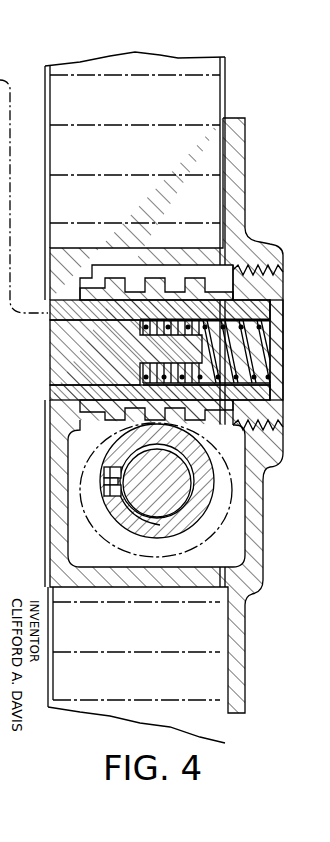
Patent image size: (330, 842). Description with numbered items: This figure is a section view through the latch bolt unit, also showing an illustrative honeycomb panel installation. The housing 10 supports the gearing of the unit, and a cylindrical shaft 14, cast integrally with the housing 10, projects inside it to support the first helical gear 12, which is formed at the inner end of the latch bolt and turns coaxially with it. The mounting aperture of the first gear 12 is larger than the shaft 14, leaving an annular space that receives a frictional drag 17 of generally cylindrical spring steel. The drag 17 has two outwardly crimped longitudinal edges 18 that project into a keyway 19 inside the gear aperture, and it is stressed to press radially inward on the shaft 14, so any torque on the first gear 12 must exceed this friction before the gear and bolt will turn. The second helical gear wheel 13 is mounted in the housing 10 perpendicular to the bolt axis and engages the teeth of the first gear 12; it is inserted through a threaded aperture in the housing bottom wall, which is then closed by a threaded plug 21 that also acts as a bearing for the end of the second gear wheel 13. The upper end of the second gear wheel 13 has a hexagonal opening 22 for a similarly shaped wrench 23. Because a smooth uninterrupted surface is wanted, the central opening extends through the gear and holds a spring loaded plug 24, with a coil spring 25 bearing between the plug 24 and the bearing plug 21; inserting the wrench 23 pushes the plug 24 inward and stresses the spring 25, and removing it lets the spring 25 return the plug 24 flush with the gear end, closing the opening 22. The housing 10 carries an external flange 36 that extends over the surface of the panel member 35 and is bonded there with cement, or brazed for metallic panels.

The housing 10 is at (167, 423).
The first helical gear 12 is at (103, 470).
The second helical gear wheel 13 is at (158, 270).
The cylindrical shaft 14 is at (172, 500).
The frictional drag 17 is at (122, 522).
The outwardly crimped longitudinal edges 18 is at (105, 492).
The keyway 19 is at (105, 482).
The threaded plug 21 is at (270, 290).
The opening 22 is at (48, 322).
The wrench 23 is at (0, 368).
The spring loaded plug 24 is at (62, 350).
The coil spring 25 is at (256, 351).
The panel member 35 is at (225, 108).
The external flange 36 is at (246, 170).